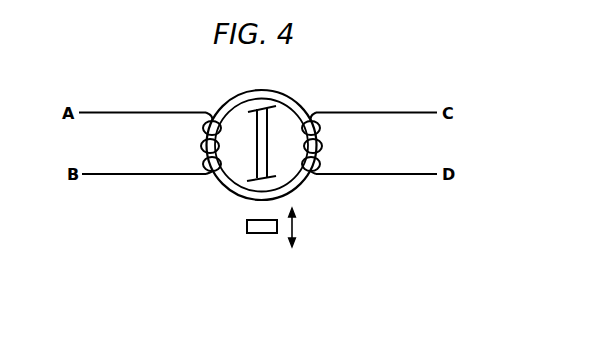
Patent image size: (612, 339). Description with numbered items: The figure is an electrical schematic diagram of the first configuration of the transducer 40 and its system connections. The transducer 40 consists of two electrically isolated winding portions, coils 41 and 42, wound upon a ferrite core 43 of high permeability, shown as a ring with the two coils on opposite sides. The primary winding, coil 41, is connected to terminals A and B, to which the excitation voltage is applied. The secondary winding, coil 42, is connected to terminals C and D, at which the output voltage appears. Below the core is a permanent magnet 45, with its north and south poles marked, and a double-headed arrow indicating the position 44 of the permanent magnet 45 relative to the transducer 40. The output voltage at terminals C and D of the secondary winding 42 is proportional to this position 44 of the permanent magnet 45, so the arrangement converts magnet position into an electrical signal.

The transducer 40 is at (283, 145).
The primary winding coil 41 is at (202, 147).
The secondary winding coil 42 is at (320, 144).
The ferrite core 43 is at (291, 104).
The position of the permanent magnet 44 is at (296, 227).
The permanent magnet 45 is at (247, 226).